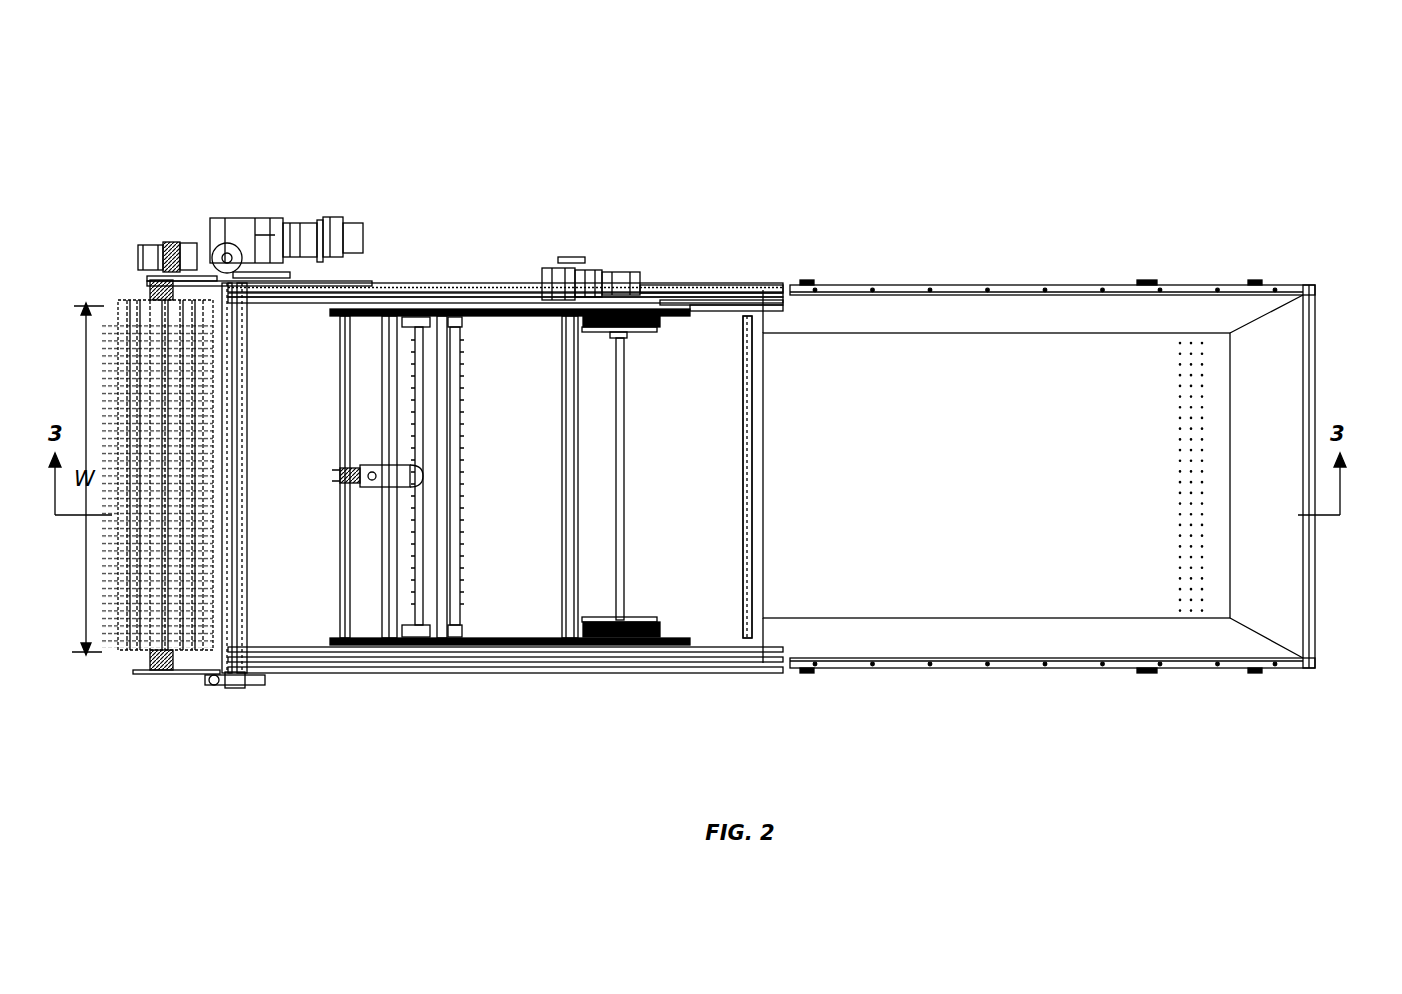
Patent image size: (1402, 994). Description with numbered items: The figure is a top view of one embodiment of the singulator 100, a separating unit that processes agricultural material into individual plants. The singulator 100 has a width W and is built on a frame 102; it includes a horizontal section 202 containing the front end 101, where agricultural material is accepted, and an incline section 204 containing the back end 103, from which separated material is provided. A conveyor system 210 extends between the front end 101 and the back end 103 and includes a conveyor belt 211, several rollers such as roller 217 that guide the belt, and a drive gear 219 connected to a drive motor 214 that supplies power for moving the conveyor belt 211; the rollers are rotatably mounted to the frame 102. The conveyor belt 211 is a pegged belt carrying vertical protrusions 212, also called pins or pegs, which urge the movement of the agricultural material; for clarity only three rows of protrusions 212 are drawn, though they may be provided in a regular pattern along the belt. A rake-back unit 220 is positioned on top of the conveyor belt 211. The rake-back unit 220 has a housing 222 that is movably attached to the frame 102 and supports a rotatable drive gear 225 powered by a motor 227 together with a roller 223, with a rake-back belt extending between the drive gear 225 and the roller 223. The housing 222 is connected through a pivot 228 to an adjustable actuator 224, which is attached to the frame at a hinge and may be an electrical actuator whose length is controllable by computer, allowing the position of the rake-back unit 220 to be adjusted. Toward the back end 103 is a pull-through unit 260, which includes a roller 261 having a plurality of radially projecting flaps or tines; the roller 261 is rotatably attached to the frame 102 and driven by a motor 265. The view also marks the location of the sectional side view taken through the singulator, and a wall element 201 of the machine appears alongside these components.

The singulator 100 is at (148, 98).
The front end 101 is at (1176, 196).
The frame 102 is at (516, 281).
The back end 103 is at (173, 174).
The tank wall 201 is at (992, 304).
The horizontal section 202 is at (1305, 722).
The incline section 204 is at (760, 722).
The conveyor system 210 is at (792, 138).
The conveyor belt 211 is at (571, 478).
The vertical protrusions 212 is at (1171, 500).
The drive motor 214 is at (320, 235).
The roller 217 is at (745, 327).
The drive gear 219 is at (212, 677).
The rake-back unit 220 is at (408, 98).
The housing 222 is at (663, 317).
The roller 223 is at (418, 320).
The adjustable actuator 224 is at (370, 462).
The drive gear 225 is at (663, 313).
The motor 227 is at (569, 256).
The pivot 228 is at (560, 388).
The pull-through unit 260 is at (122, 206).
The roller 261 is at (120, 293).
The motor 265 is at (136, 258).